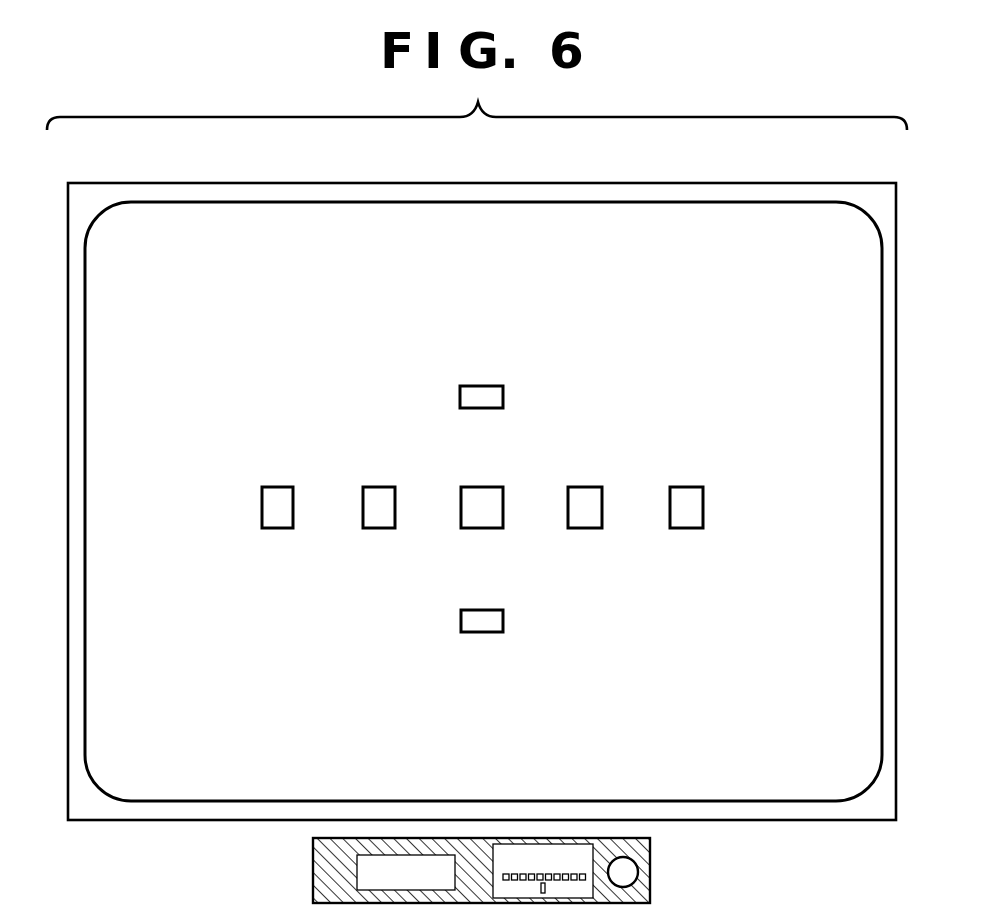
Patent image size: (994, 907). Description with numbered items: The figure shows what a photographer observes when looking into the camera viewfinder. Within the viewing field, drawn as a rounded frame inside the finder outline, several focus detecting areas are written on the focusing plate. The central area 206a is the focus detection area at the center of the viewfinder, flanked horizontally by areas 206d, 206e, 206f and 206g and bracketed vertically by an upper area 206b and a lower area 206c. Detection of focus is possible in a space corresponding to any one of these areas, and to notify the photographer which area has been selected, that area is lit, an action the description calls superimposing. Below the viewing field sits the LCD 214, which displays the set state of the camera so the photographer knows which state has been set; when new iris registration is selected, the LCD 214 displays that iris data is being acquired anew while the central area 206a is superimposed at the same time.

The focus detecting area 206a is at (482, 528).
The focus detecting area 206b is at (483, 386).
The focus detecting area 206c is at (481, 632).
The focus detecting area 206d is at (275, 528).
The focus detecting area 206e is at (380, 528).
The focus detection area (right inner) 206f is at (585, 528).
The focus detection area (right outer) 206g is at (685, 528).
The LCD 214 is at (313, 872).